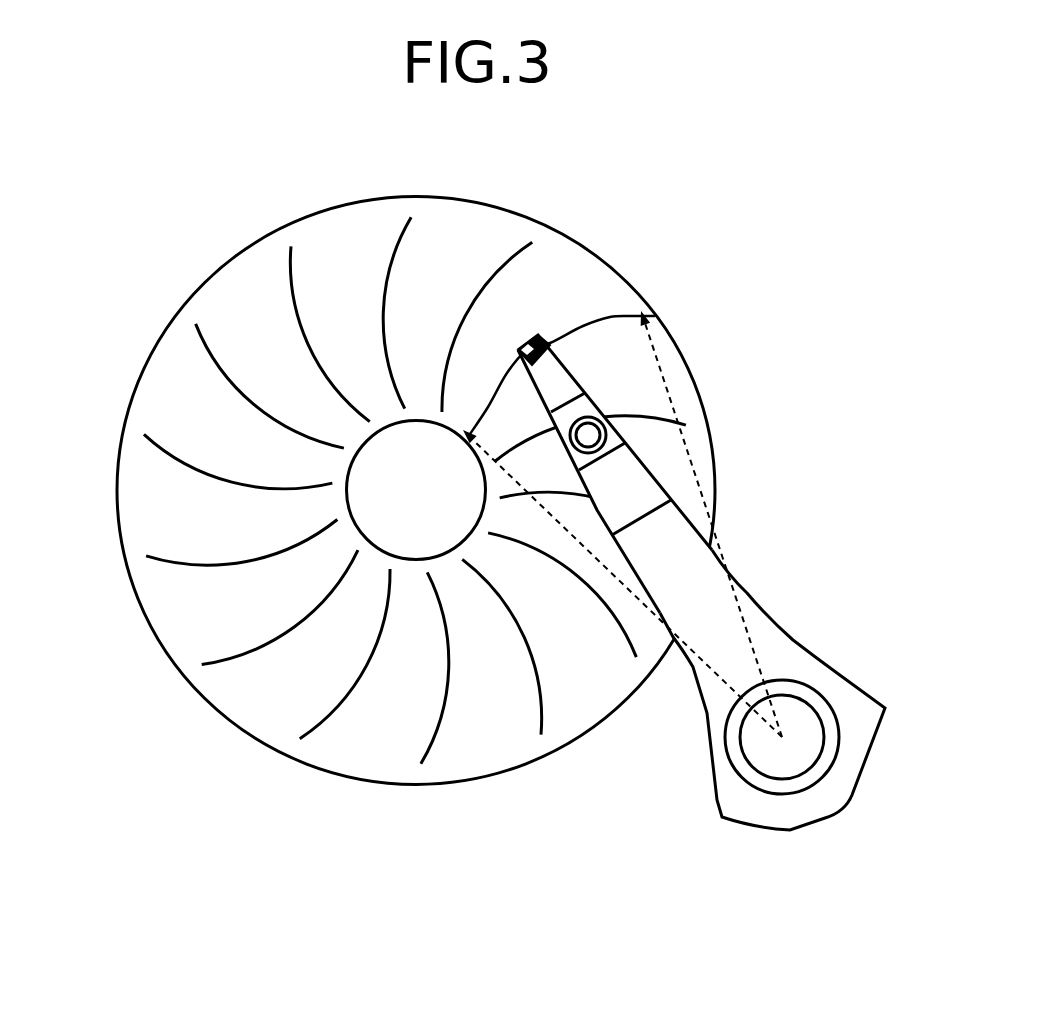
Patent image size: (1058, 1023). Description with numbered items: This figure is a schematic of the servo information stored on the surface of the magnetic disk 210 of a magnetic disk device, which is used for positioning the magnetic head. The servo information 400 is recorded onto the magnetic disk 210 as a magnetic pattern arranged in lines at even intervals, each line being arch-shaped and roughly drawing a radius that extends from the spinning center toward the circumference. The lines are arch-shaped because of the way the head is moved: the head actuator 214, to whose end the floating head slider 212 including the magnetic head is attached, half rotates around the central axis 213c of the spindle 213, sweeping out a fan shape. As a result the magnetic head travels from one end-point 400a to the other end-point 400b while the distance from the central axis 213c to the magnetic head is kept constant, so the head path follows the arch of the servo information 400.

The magnetic disk 210 is at (140, 378).
The servo information 400 is at (404, 240).
The floating head slider 212 is at (522, 338).
The end-point 400a is at (468, 442).
The end-point 400b is at (643, 314).
The head actuator 214 is at (747, 594).
The spindle 213 is at (793, 763).
The central axis 213c is at (780, 735).